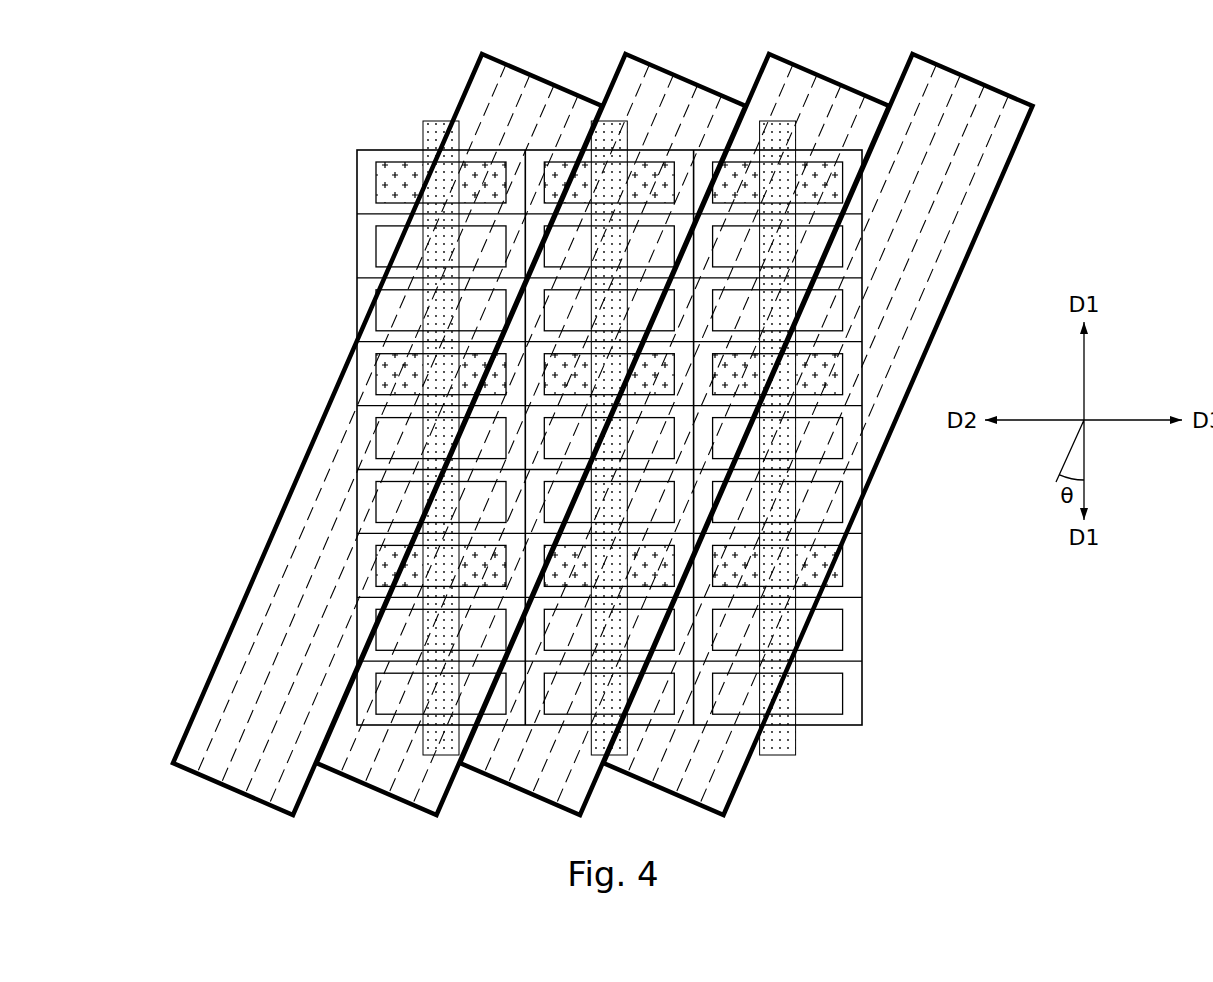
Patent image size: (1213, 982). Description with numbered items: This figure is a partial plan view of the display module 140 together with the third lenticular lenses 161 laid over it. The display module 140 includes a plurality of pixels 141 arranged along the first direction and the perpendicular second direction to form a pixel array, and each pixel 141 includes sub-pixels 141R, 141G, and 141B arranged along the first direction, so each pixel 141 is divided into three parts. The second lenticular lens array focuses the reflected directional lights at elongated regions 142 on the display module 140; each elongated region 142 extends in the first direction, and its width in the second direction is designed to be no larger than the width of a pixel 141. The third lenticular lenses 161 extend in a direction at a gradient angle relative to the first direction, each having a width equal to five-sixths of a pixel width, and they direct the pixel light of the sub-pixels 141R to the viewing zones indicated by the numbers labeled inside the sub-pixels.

The display module 140 is at (495, 424).
The pixel 141 is at (317, 247).
The sub-pixel 141R is at (385, 182).
The sub-pixel 141G is at (385, 240).
The sub-pixel 141B is at (385, 305).
The elongated region 142 is at (423, 137).
The third lenticular lens 161 is at (462, 88).